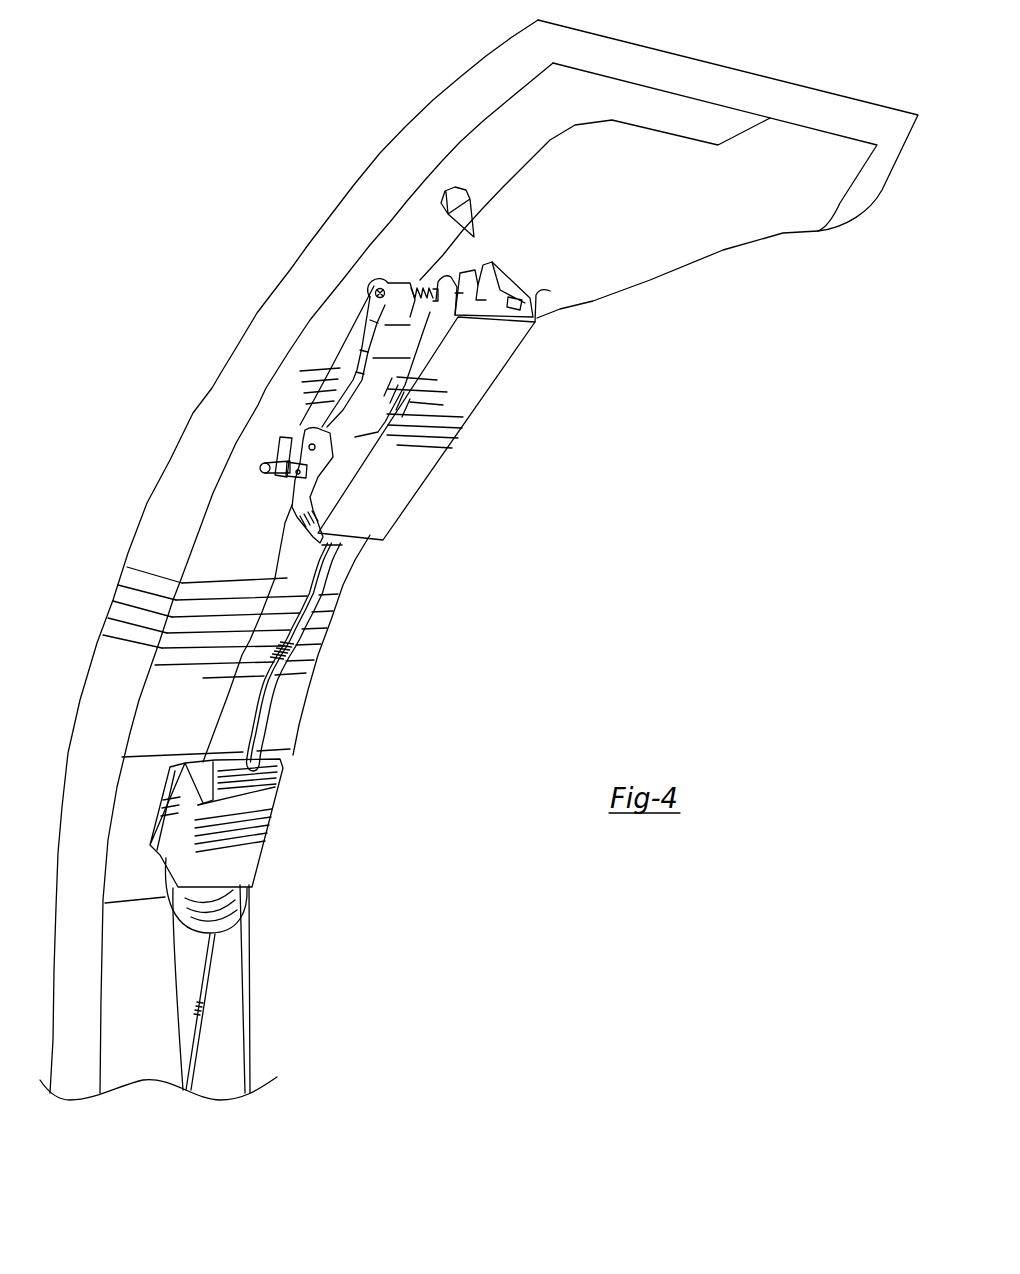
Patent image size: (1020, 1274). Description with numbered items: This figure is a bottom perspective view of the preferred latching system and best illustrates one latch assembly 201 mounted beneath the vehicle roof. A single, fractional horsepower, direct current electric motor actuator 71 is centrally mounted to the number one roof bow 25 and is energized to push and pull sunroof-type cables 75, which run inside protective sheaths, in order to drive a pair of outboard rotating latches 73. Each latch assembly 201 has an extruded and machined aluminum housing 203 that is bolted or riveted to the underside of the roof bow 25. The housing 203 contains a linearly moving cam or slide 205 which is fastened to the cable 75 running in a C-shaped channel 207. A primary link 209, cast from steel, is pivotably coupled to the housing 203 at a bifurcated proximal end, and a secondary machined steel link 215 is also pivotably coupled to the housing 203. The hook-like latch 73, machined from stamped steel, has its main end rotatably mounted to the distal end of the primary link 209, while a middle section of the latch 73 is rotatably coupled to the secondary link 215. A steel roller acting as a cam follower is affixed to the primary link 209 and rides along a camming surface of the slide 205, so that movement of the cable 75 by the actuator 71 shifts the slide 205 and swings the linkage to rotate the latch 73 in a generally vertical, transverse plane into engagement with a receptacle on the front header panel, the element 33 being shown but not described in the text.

The roof header panel 33 is at (749, 93).
The number one roof bow 25 is at (282, 718).
The electric motor actuator 71 is at (218, 910).
The rotating latch 73 is at (300, 525).
The sunroof-type cable 75 is at (325, 575).
The latch assembly 201 is at (530, 477).
The housing 203 is at (483, 368).
The slide 205 is at (470, 290).
The C-shaped channel 207 is at (550, 291).
The primary link 209 is at (358, 367).
The secondary link 215 is at (263, 463).